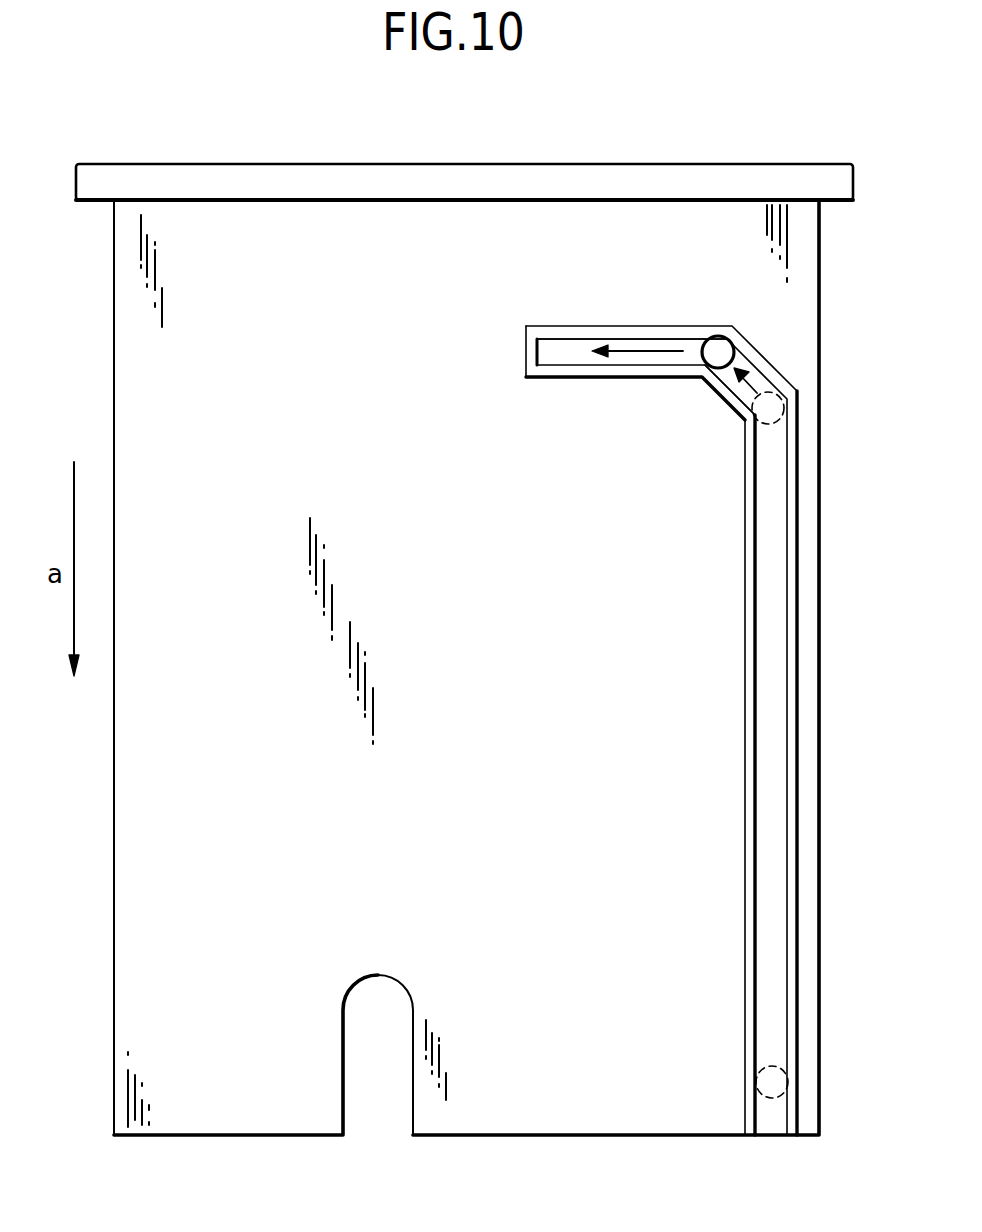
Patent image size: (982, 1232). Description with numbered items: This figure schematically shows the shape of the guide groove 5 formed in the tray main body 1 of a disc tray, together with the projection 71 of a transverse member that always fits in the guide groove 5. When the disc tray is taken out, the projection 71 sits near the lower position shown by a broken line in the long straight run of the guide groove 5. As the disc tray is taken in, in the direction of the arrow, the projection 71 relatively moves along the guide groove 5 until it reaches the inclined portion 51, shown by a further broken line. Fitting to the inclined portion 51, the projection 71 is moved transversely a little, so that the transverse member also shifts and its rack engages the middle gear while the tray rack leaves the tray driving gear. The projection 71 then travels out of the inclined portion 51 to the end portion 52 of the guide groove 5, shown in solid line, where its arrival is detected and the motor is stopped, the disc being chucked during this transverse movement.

The tray main body 1 is at (799, 326).
The guide groove 5 is at (770, 678).
The inclined portion 51 is at (740, 392).
The end portion 52 is at (552, 355).
The projection 71 is at (713, 336).